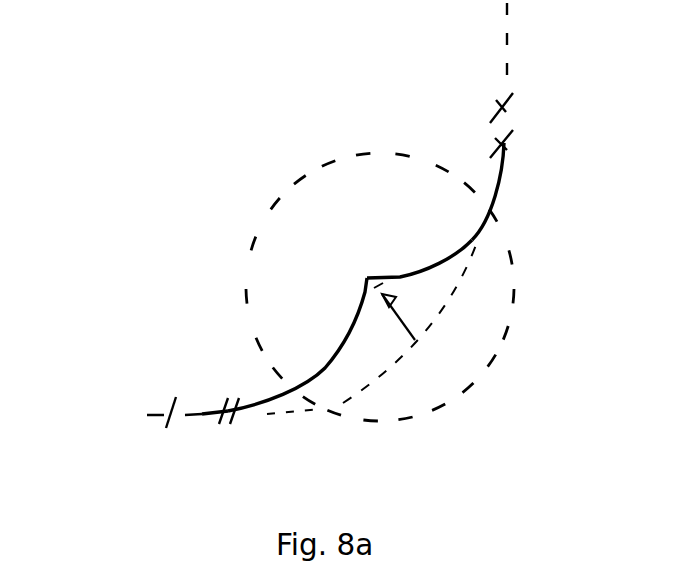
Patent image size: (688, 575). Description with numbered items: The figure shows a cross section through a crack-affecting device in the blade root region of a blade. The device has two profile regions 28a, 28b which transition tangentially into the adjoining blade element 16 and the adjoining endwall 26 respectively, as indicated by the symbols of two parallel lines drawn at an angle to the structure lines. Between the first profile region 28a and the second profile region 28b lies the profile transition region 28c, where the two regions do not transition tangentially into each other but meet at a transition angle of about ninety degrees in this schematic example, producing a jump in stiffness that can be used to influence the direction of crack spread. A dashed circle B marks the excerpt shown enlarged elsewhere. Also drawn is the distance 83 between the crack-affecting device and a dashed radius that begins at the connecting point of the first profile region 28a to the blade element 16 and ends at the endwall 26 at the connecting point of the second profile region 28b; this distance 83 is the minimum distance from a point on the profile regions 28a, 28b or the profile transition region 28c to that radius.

The blade element 16 is at (508, 40).
The endwall 26 is at (132, 417).
The first profile region 28a is at (449, 254).
The second profile region 28b is at (328, 364).
The profile transition region 28c is at (355, 250).
The distance 83 is at (404, 323).
The dashed circle B is at (500, 345).